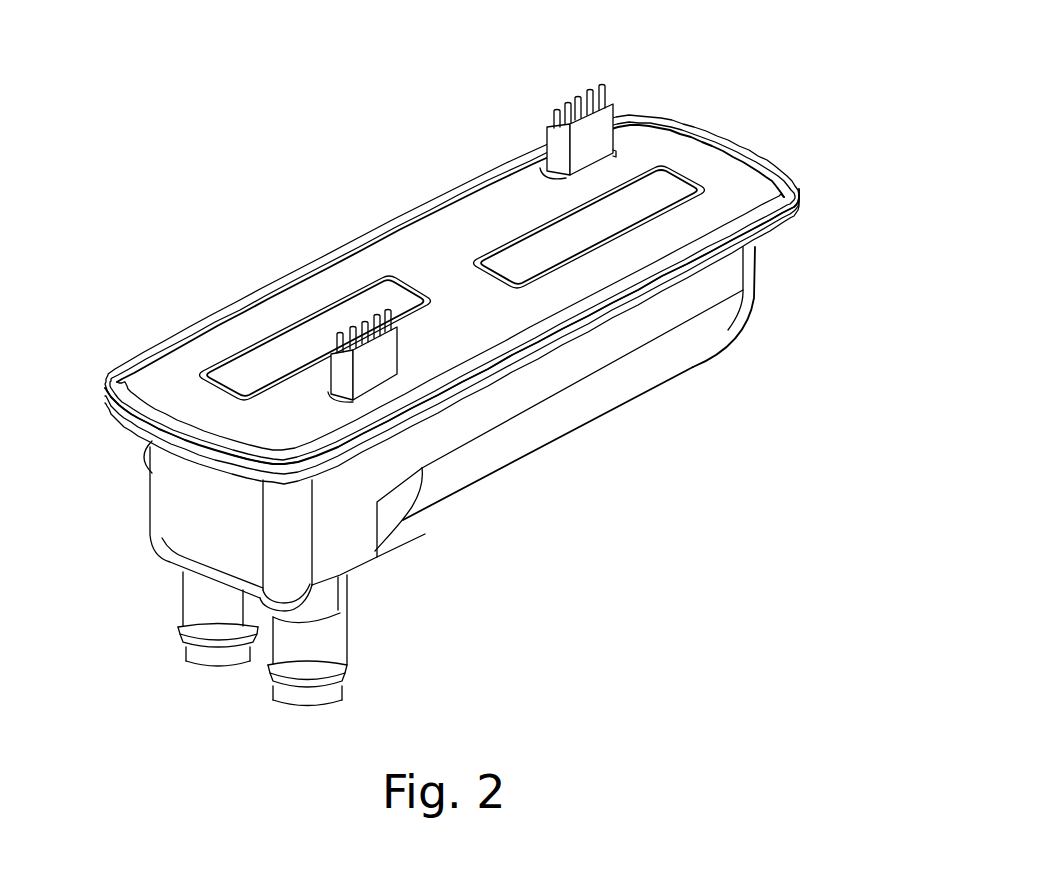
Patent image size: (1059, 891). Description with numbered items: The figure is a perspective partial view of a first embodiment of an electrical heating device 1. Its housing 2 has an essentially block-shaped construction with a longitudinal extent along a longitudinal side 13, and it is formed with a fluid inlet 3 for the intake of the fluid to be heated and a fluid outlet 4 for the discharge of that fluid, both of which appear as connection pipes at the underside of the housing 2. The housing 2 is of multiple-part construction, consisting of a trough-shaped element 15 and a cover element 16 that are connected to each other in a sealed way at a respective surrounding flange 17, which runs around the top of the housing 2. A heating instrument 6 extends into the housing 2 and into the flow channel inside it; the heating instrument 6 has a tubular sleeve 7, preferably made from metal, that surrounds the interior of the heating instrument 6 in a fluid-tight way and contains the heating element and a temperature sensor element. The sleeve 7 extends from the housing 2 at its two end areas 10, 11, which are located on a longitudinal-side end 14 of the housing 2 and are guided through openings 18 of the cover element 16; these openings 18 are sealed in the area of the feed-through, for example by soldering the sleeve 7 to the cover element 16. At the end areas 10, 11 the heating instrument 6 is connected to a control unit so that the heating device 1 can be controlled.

The electrical heating device 1 is at (838, 168).
The housing 2 is at (677, 355).
The fluid inlet 3 is at (320, 648).
The fluid outlet 4 is at (198, 613).
The heating instrument 6 is at (590, 133).
The sleeve 7 is at (338, 374).
The end area 10 is at (377, 376).
The end area 11 is at (532, 174).
The longitudinal side 13 is at (582, 357).
The longitudinal-side end 14 is at (680, 148).
The trough-shaped element 15 is at (722, 286).
The cover element 16 is at (743, 177).
The surrounding flange 17 is at (111, 385).
The opening 18 is at (540, 175).